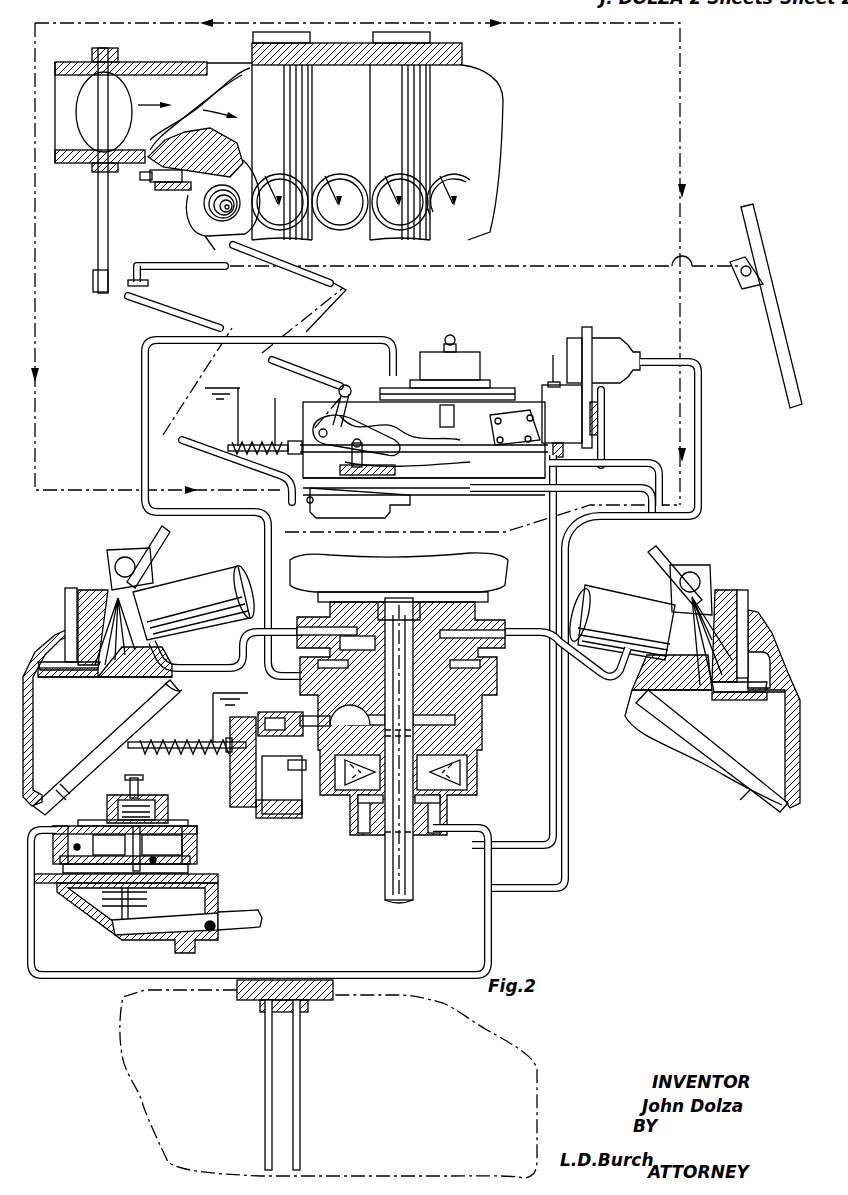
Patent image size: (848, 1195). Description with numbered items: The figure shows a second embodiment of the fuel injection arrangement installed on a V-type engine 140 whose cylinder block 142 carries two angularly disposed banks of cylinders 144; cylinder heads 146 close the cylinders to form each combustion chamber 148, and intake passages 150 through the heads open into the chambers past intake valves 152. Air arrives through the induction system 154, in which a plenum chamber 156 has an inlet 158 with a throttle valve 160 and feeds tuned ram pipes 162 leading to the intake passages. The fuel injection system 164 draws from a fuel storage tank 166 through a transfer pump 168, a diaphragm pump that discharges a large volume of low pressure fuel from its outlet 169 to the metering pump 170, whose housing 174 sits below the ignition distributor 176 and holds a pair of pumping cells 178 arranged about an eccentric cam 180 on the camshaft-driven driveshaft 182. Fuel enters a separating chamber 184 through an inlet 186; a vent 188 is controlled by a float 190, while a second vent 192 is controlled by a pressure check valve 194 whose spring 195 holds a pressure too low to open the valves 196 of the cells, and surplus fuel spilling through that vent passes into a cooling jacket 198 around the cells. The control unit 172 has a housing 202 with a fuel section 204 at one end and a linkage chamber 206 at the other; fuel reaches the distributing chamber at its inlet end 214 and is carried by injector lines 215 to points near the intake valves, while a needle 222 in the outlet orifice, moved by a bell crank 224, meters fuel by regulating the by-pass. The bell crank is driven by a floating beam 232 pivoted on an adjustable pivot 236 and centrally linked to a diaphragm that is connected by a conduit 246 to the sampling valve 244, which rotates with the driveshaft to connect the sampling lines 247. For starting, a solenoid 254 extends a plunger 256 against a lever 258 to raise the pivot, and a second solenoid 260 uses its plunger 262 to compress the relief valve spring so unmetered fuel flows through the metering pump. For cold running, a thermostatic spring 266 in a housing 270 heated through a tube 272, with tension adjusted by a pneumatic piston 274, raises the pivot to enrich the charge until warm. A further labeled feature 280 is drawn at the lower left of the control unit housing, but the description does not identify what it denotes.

The V-type engine 140 is at (108, 574).
The cylinder block 142 is at (164, 686).
The cylinders 144 is at (98, 756).
The cylinder heads 146 is at (58, 625).
The combustion chamber 148 is at (70, 792).
The intake passages 150 is at (120, 672).
The intake valves 152 is at (66, 598).
The induction system 154 is at (188, 58).
The plenum chamber 156 is at (440, 138).
The inlet 158 is at (70, 150).
The throttle valve 160 is at (100, 80).
The ram pipes 162 is at (375, 118).
The fuel injection system 164 is at (352, 826).
The fuel storage tank 166 is at (505, 1030).
The transfer pump 168 is at (200, 866).
The outlet 169 is at (200, 830).
The metering pump 170 is at (500, 780).
The control unit 172 is at (462, 364).
The housing 174 is at (470, 818).
The ignition distributor 176 is at (473, 578).
The pumping cells 178 is at (447, 696).
The eccentric cam 180 is at (428, 772).
The driveshaft 182 is at (414, 870).
The separating chamber 184 is at (296, 820).
The inlet 186 is at (246, 790).
The vent 188 is at (345, 696).
The float 190 is at (290, 810).
The vent 192 is at (262, 714).
The pressure check valve 194 is at (284, 714).
The spring 195 is at (200, 762).
The valves 196 is at (474, 766).
The cooling jacket 198 is at (478, 715).
The housing 202 is at (574, 346).
The fuel section 204 is at (592, 412).
The linkage chamber 206 is at (455, 478).
The inlet end 214 is at (448, 672).
The injector lines 215 is at (363, 640).
The needle 222 is at (530, 420).
The bell crank 224 is at (503, 435).
The floating beam 232 is at (402, 460).
The adjustable pivot 236 is at (346, 444).
The sampling valve 244 is at (485, 660).
The conduit 246 is at (142, 415).
The sampling lines 247 is at (215, 668).
The solenoid 254 is at (262, 444).
The plunger 256 is at (232, 444).
The lever 258 is at (300, 350).
The second solenoid 260 is at (142, 744).
The plunger 262 is at (134, 748).
The thermostatic spring 266 is at (206, 212).
The housing 270 is at (225, 236).
The tube 272 is at (258, 233).
The pneumatic piston 274 is at (165, 186).
The housing inlet 280 is at (392, 508).